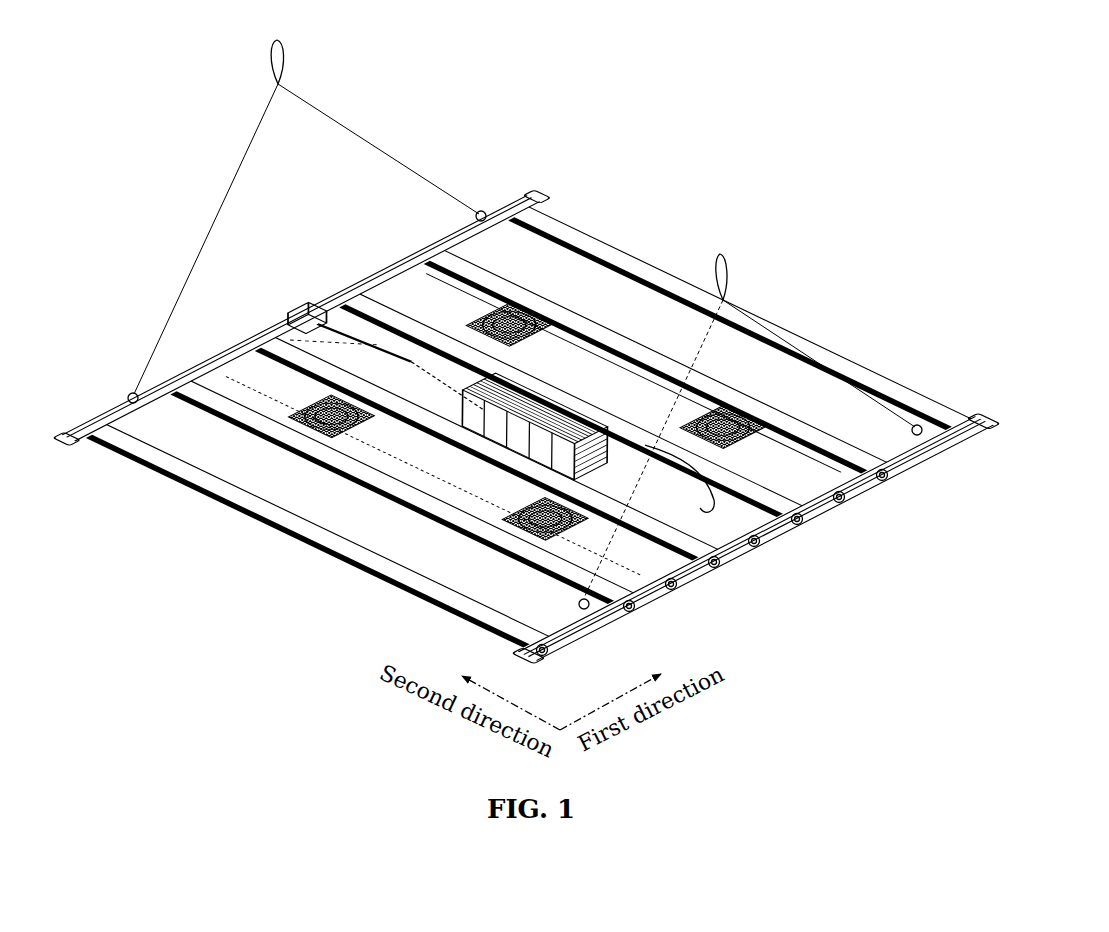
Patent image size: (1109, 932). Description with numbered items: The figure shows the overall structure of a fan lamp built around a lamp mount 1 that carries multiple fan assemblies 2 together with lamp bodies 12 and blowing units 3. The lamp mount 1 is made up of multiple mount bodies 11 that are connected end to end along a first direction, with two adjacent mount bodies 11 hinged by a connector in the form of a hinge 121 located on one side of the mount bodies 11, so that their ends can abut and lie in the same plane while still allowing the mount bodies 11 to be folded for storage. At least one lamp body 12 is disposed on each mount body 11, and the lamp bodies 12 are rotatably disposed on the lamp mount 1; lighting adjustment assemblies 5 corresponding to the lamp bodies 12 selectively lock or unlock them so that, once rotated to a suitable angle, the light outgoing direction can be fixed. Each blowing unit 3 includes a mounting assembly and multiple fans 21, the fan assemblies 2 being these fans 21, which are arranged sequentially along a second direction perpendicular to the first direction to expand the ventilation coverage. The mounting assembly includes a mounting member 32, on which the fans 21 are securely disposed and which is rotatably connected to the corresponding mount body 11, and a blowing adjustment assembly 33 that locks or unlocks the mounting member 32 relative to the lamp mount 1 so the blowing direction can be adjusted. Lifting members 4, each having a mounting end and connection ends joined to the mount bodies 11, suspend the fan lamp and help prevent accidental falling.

The lamp mount 1 is at (896, 490).
The mount body 11 is at (912, 445).
The lamp body 12 is at (603, 260).
The hinge 121 is at (756, 537).
The fan assembly 2 is at (527, 409).
The fan 21 is at (518, 338).
The blowing unit 3 is at (605, 353).
The mounting member 32 is at (778, 446).
The blowing adjustment assembly 33 is at (845, 505).
The lifting member 4 is at (730, 273).
The lighting adjustment assembly 5 is at (550, 656).